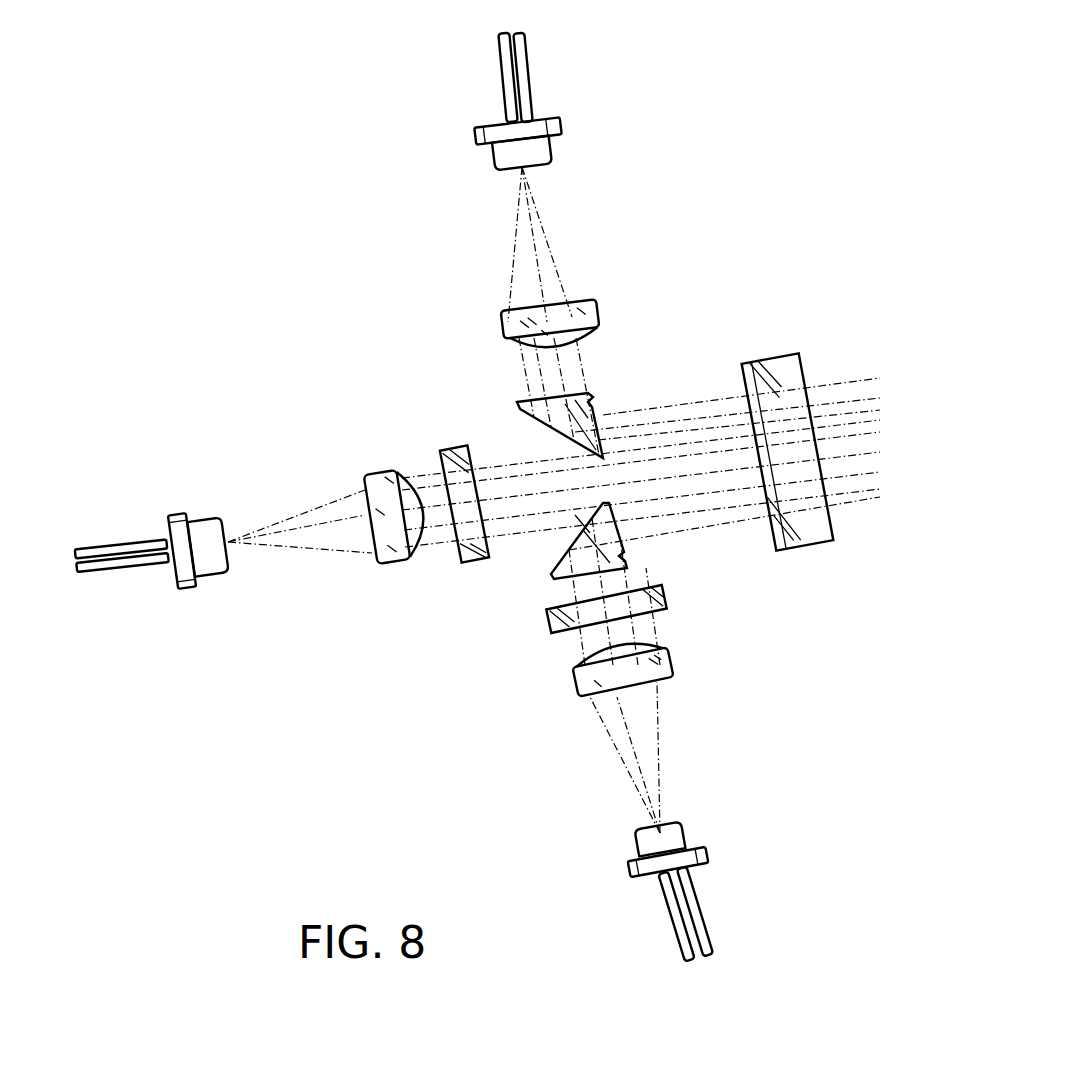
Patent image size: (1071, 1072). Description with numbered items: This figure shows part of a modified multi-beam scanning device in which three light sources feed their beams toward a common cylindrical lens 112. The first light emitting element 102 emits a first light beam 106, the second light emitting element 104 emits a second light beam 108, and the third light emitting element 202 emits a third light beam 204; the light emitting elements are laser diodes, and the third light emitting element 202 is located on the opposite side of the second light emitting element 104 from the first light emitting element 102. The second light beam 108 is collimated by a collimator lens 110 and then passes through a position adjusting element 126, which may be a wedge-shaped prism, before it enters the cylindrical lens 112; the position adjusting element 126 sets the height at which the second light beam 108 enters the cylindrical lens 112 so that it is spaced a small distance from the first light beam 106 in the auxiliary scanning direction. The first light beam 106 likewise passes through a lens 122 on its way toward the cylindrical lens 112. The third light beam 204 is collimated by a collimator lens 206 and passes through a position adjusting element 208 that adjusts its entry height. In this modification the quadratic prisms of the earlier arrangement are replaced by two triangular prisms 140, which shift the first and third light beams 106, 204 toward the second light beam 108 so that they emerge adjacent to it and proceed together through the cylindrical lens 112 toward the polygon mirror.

The first light emitting element 102 is at (560, 128).
The second light emitting element 104 is at (178, 513).
The first light beam 106 is at (517, 248).
The second light beam 108 is at (312, 553).
The collimator lens 110 is at (380, 475).
The cylindrical lens 112 is at (766, 363).
The collimating lens 122 is at (627, 318).
The position adjusting element 126 is at (450, 450).
The triangular prism 140 is at (500, 403).
The third light emitting element 202 is at (630, 860).
The third light beam 204 is at (610, 740).
The collimator lens 206 is at (668, 672).
The position adjusting element 208 is at (667, 595).